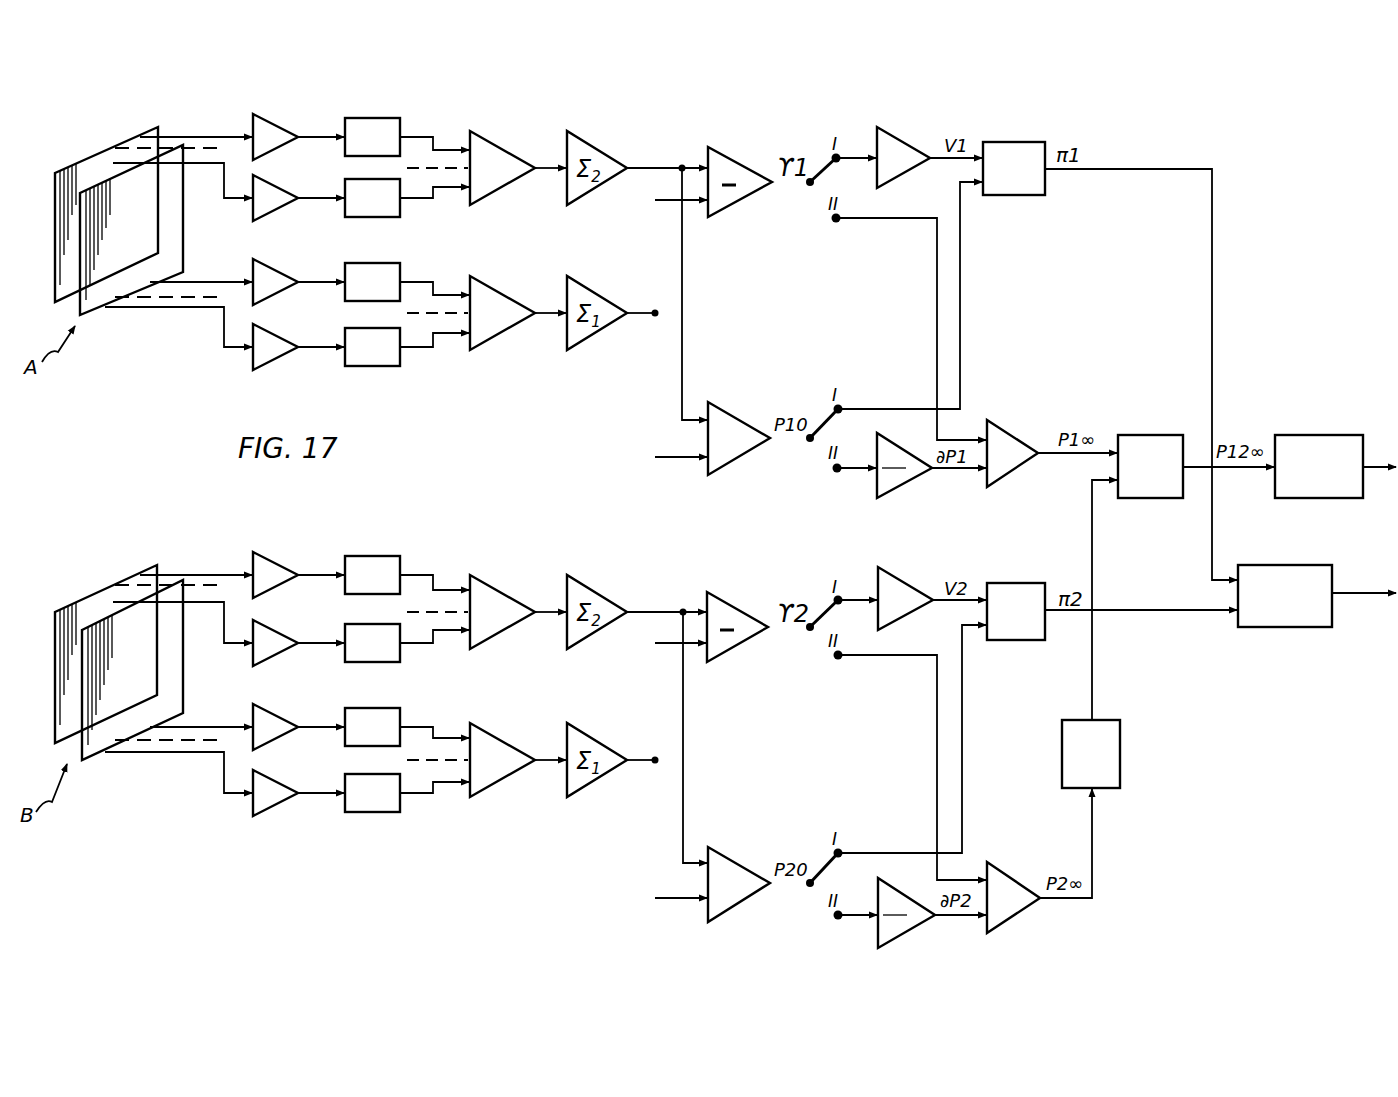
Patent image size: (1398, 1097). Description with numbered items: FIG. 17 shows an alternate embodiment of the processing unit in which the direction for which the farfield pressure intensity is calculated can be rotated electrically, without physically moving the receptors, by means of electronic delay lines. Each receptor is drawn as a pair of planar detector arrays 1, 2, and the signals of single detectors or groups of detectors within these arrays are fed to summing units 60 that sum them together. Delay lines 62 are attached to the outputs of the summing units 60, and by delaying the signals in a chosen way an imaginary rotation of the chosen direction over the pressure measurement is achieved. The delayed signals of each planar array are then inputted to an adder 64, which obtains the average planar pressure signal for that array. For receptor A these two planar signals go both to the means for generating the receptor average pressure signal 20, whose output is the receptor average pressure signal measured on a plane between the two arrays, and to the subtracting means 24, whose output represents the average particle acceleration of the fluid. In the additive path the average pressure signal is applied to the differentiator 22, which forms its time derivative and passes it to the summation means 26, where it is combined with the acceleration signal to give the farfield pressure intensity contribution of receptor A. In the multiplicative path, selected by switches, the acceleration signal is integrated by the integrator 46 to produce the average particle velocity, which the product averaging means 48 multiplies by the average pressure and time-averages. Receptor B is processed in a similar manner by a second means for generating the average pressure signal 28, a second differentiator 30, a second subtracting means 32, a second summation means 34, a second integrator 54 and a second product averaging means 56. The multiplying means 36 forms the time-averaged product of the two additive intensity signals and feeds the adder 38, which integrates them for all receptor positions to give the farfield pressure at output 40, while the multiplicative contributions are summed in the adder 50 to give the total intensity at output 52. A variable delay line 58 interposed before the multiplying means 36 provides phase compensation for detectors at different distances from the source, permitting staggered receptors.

The front sensing plate 1 is at (185, 236).
The rear sensing plate 2 is at (112, 148).
The means for generating the receptor average pressure signal 20 is at (726, 402).
The differentiator 22 is at (903, 485).
The subtracting means 24 is at (742, 130).
The summation means 26 is at (1005, 432).
The half-sum amplifier 28 is at (736, 847).
The differentiator 30 is at (915, 928).
The difference amplifier 32 is at (730, 605).
The summing amplifier 34 is at (1015, 915).
The multiplying means 36 is at (1140, 435).
The adder 38 is at (1320, 435).
The output line 40 is at (1376, 462).
The integrator 46 is at (905, 143).
The product averaging means 48 is at (1022, 142).
The adder 50 is at (1290, 627).
The output line 52 is at (1368, 596).
The integrator 54 is at (912, 587).
The multiplier 56 is at (1022, 583).
The delay line 58 is at (1062, 758).
The summing unit 60 is at (281, 452).
The delay line 62 is at (394, 467).
The adder 64 is at (502, 447).